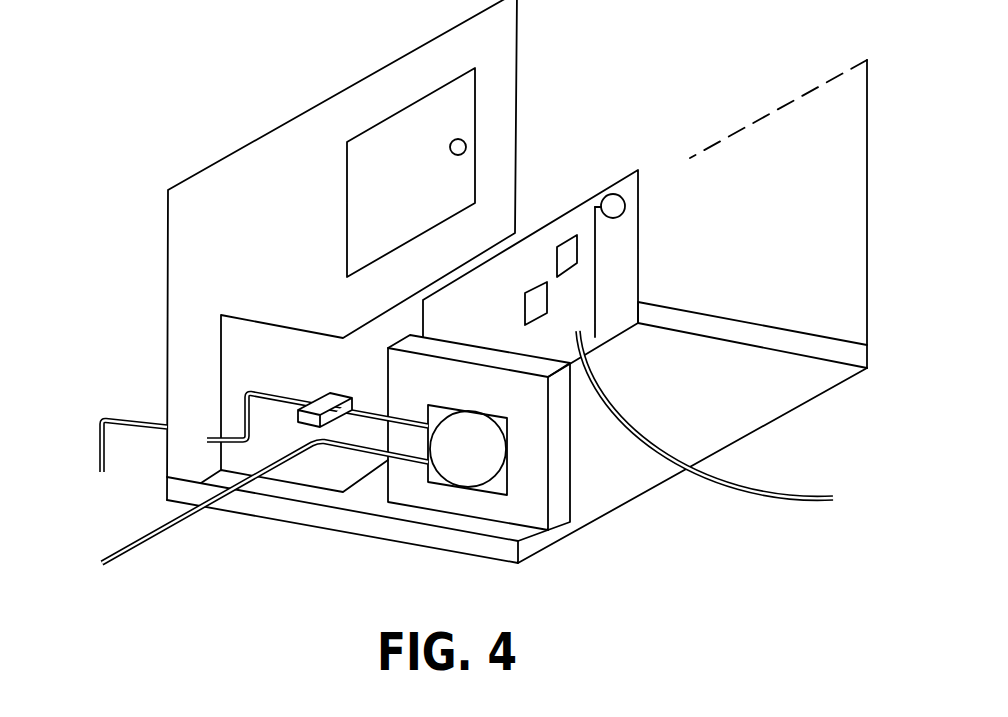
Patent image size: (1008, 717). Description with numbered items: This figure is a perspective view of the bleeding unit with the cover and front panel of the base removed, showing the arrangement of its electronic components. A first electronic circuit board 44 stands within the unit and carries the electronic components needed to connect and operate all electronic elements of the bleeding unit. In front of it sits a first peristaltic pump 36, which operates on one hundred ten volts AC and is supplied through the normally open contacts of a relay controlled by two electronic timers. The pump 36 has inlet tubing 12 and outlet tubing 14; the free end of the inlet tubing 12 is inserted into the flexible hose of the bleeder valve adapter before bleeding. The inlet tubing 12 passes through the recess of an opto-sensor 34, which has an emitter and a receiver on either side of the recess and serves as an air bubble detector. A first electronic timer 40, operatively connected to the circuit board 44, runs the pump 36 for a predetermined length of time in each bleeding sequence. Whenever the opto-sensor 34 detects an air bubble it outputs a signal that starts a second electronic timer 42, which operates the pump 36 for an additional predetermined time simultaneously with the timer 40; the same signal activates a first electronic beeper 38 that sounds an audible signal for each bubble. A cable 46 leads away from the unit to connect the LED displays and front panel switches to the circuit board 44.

The inlet tubing 12 is at (117, 407).
The outlet tubing 14 is at (140, 545).
The opto-sensor 34 is at (318, 385).
The first peristaltic pump 36 is at (577, 519).
The first electronic beeper 38 is at (618, 190).
The first electronic timer 40 is at (583, 238).
The second electronic timer 42 is at (553, 293).
The first electronic circuit board 44 is at (528, 258).
The cable 46 is at (817, 515).